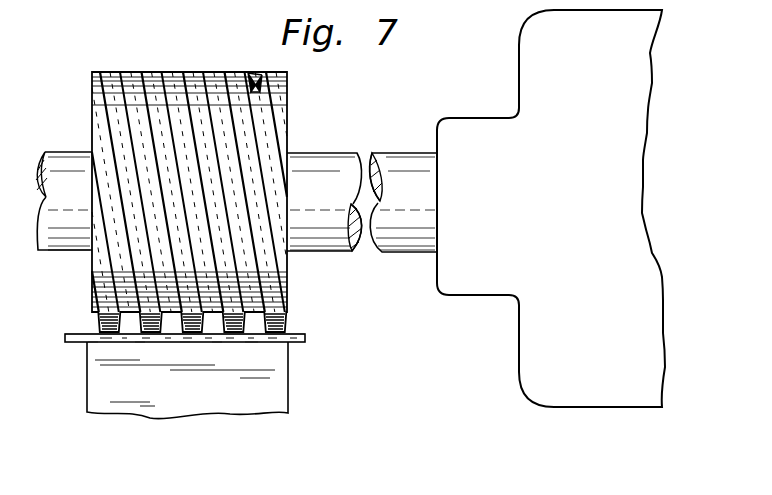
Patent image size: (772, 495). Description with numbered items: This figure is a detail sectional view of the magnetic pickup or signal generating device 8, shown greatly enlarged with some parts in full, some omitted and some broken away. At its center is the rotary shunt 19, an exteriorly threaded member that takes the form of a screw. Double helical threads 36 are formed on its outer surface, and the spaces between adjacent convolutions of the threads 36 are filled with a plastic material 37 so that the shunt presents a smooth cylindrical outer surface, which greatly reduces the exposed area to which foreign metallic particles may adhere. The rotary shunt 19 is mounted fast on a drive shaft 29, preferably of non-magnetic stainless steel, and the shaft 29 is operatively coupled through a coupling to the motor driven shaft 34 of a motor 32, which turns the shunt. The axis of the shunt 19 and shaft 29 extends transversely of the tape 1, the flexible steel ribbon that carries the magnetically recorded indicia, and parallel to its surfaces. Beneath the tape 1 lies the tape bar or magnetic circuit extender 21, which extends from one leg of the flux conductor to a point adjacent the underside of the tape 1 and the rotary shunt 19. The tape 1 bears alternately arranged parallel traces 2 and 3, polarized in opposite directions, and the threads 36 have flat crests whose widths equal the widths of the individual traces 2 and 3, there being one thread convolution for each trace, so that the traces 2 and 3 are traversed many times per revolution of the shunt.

The tape 1 is at (306, 337).
The traces 2 is at (185, 342).
The traces 3 is at (92, 342).
The magnetic pickup or signal generating device 8 is at (82, 320).
The rotary shunt 19 is at (188, 188).
The tape bar or magnetic circuit extender 21 is at (190, 407).
The drive shaft 29 is at (332, 201).
The motor 32 is at (598, 167).
The motor driven shaft 34 is at (420, 201).
The threads 36 is at (248, 163).
The plastic material 37 is at (135, 118).